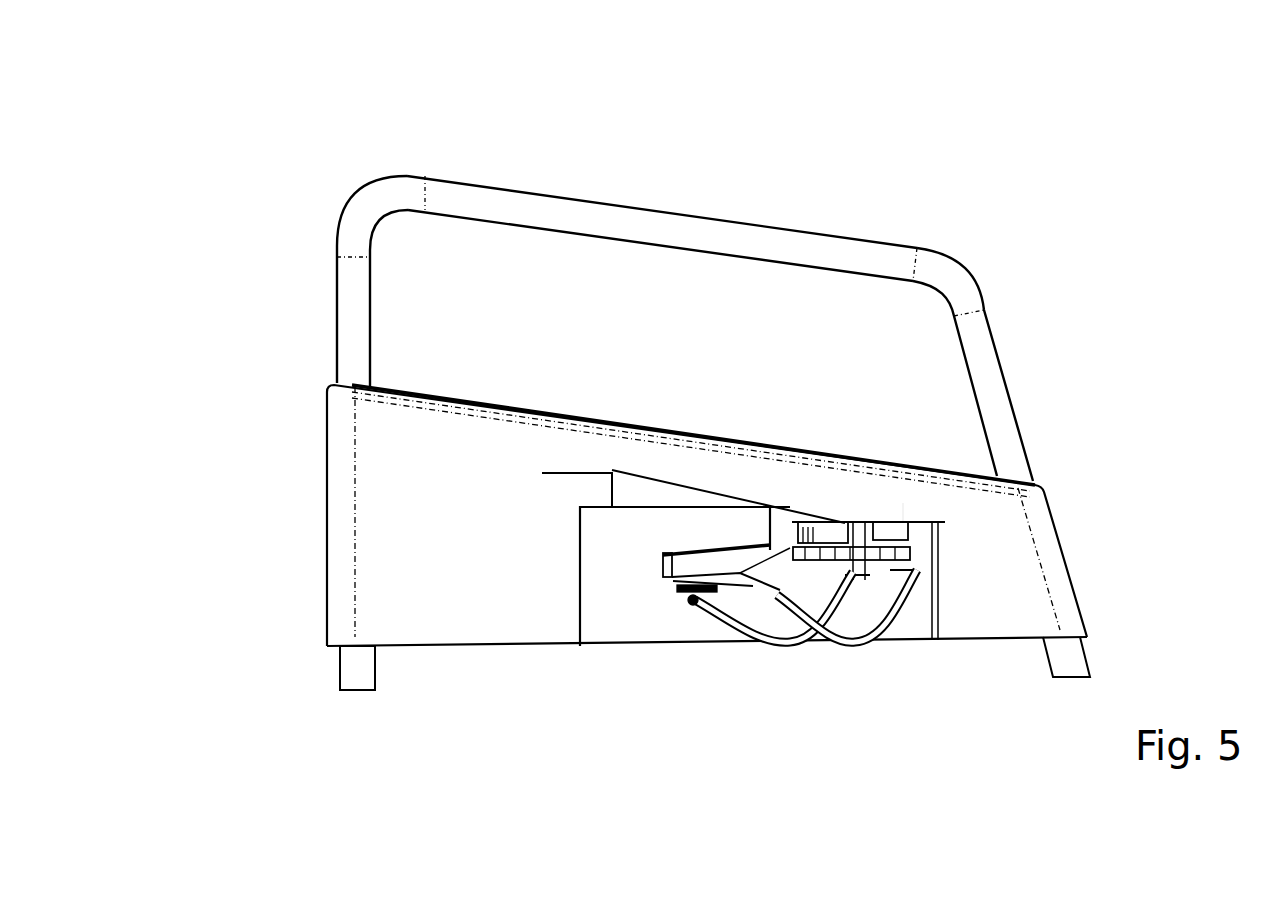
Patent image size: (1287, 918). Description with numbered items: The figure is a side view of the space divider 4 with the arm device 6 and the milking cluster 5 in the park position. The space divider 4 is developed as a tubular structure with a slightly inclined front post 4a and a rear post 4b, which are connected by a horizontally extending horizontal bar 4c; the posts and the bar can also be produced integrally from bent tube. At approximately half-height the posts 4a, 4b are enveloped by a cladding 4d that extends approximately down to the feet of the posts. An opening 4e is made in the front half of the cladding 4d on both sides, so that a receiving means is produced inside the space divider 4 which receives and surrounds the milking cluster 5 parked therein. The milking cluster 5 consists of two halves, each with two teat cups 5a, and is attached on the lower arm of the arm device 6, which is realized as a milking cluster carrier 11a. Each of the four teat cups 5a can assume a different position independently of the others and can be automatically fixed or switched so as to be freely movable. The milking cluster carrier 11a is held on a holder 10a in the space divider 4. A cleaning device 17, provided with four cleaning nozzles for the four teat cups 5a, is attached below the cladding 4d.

The space divider 4 is at (663, 272).
The front post 4a is at (993, 378).
The rear post 4b is at (350, 315).
The horizontal bar 4c is at (525, 205).
The cladding 4d is at (385, 593).
The opening 4e is at (920, 614).
The milking cluster 5 is at (852, 658).
The teat cup 5a is at (877, 523).
The arm device 6 is at (703, 621).
The holder 10a is at (783, 523).
The milking cluster carrier 11a is at (773, 563).
The cleaning device 17 is at (903, 503).